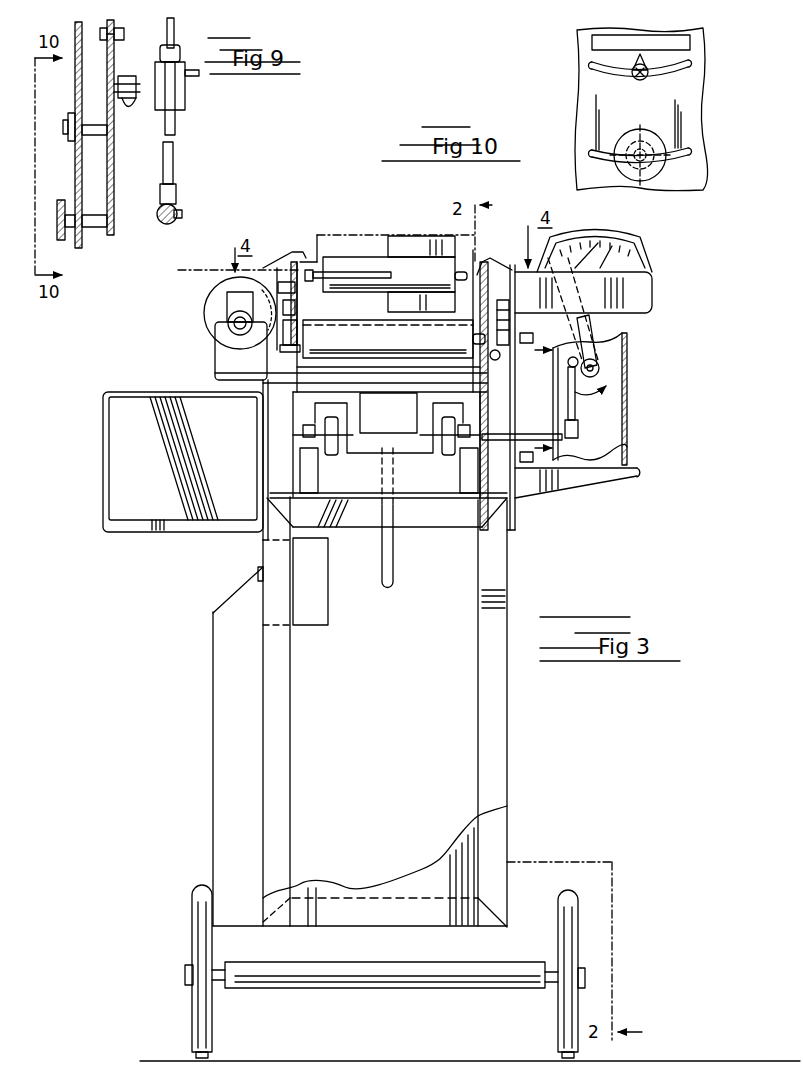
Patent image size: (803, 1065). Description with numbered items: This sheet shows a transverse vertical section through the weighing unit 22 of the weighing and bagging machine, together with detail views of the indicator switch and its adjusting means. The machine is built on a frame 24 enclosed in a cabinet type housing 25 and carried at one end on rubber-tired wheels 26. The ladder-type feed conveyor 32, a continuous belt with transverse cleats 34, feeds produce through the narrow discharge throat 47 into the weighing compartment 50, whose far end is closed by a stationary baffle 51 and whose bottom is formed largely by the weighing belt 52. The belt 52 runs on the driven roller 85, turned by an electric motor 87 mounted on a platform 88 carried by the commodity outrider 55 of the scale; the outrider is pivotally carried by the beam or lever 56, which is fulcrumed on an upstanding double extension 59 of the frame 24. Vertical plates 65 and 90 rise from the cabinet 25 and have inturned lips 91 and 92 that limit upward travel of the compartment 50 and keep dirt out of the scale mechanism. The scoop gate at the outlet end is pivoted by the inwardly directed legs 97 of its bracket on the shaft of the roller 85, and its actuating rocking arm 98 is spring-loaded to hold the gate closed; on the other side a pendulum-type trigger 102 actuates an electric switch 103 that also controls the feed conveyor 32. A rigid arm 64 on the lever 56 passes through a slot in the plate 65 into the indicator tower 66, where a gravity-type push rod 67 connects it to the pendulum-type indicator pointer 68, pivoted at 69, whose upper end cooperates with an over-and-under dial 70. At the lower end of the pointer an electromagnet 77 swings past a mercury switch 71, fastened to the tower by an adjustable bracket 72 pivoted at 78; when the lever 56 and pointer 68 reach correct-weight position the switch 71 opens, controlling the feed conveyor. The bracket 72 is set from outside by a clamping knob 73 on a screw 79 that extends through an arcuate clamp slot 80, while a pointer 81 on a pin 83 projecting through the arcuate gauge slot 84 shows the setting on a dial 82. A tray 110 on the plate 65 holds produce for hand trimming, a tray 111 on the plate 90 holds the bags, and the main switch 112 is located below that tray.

In FIG. 3, the weighing unit 22 is at (309, 246).
In FIG. 3, the frame 24 is at (505, 574).
In FIG. 3, the cabinet type housing 25 is at (495, 838).
In FIG. 3, the rubber-tired wheels 26 is at (198, 912).
In FIG. 3, the feed conveyor 32 is at (352, 262).
In FIG. 3, the cleats 34 is at (397, 250).
In FIG. 3, the discharge throat 47 is at (436, 230).
In FIG. 3, the weighing compartment 50 is at (292, 262).
In FIG. 3, the stationary baffle 51 is at (501, 300).
In FIG. 3, the weighing belt 52 is at (378, 332).
In FIG. 3, the commodity outrider 55 is at (394, 562).
In FIG. 3, the lever 56 is at (334, 448).
In FIG. 3, the upstanding double extension 59 is at (313, 468).
In FIG. 3, the rigid arm 64 is at (549, 436).
In FIG. 9, the rigid arm 64 is at (165, 225).
In FIG. 3, the vertical plate 65 is at (512, 378).
In FIG. 3, the indicator tower 66 is at (630, 381).
In FIG. 9, the indicator tower 66 is at (70, 170).
In FIG. 10, the indicator tower 66 is at (565, 93).
In FIG. 3, the gravity-type push rod 67 is at (577, 398).
In FIG. 9, the gravity-type push rod 67 is at (176, 155).
In FIG. 3, the indicator pointer 68 is at (600, 341).
In FIG. 9, the indicator pointer 68 is at (176, 31).
In FIG. 3, the pointer pivot 69 is at (600, 368).
In FIG. 9, the pointer pivot 69 is at (194, 76).
In FIG. 3, the dial 70 is at (640, 250).
In FIG. 9, the mercury switch 71 is at (131, 106).
In FIG. 9, the adjustable bracket 72 is at (113, 160).
In FIG. 9, the knob 73 is at (62, 241).
In FIG. 10, the knob 73 is at (641, 182).
In FIG. 9, the electromagnet 77 is at (136, 80).
In FIG. 9, the bracket pivot 78 is at (116, 32).
In FIG. 9, the screw 79 is at (90, 216).
In FIG. 10, the screw 79 is at (640, 148).
In FIG. 9, the arcuate clamp slot 80 is at (86, 228).
In FIG. 10, the arcuate clamp slot 80 is at (690, 158).
In FIG. 9, the pointer 81 is at (68, 125).
In FIG. 10, the pointer 81 is at (649, 77).
In FIG. 10, the dial 82 is at (592, 42).
In FIG. 9, the pin 83 is at (90, 127).
In FIG. 9, the gauge slot 84 is at (95, 135).
In FIG. 10, the gauge slot 84 is at (688, 69).
In FIG. 3, the roller 85 is at (335, 322).
In FIG. 3, the electric motor 87 is at (205, 322).
In FIG. 3, the platform 88 is at (230, 373).
In FIG. 3, the vertical plate 90 is at (262, 395).
In FIG. 3, the inturned lip 91 is at (303, 262).
In FIG. 3, the inturned lip 92 is at (483, 258).
In FIG. 3, the inwardly directed legs 97 is at (285, 353).
In FIG. 3, the actuating rocking arm 98 is at (505, 340).
In FIG. 3, the switch-actuating trigger 102 is at (290, 322).
In FIG. 3, the electric switch 103 is at (285, 283).
In FIG. 3, the tray 110 is at (653, 293).
In FIG. 3, the tray 111 is at (152, 520).
In FIG. 3, the main switch 112 is at (262, 547).